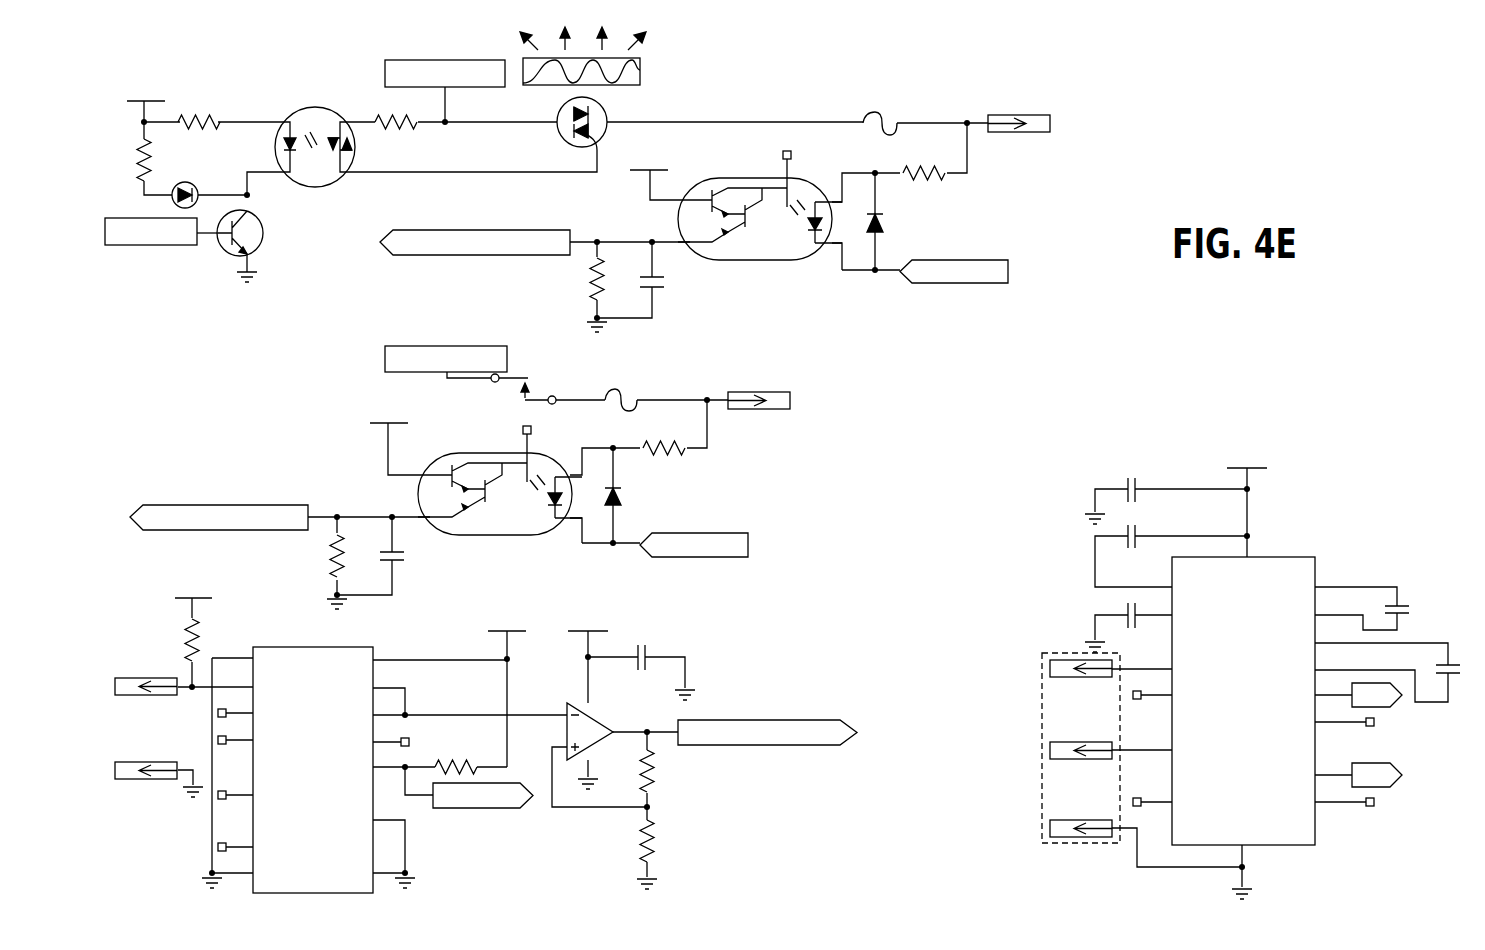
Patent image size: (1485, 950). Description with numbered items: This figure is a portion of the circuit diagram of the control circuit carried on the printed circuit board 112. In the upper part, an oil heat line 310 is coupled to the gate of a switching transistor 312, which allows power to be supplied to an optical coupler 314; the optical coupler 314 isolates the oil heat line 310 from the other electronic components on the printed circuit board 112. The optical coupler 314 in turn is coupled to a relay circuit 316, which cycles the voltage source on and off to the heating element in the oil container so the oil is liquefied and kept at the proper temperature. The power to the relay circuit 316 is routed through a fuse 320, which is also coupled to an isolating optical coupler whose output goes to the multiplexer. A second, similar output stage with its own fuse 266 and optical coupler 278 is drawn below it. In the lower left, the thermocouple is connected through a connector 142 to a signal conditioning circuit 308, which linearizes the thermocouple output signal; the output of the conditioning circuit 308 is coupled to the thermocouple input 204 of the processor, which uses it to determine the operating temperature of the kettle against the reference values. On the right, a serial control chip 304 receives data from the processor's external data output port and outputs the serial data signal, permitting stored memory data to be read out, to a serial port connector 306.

The printed circuit board 112 is at (782, 463).
The thermocouple connector 142 is at (158, 677).
The thermocouple input 204 is at (795, 719).
The fuse 266 is at (618, 389).
The optocoupler 278 is at (512, 535).
The RS 232 control chip 304 is at (1290, 557).
The RS-232 connector 306 is at (1072, 652).
The signal conditioning circuit 308 is at (500, 845).
The oil heat line 310 is at (160, 245).
The switching transistor 312 is at (263, 233).
The optical coupler 314 is at (306, 107).
The relay circuit 316 is at (640, 70).
The fuse 320 is at (877, 113).